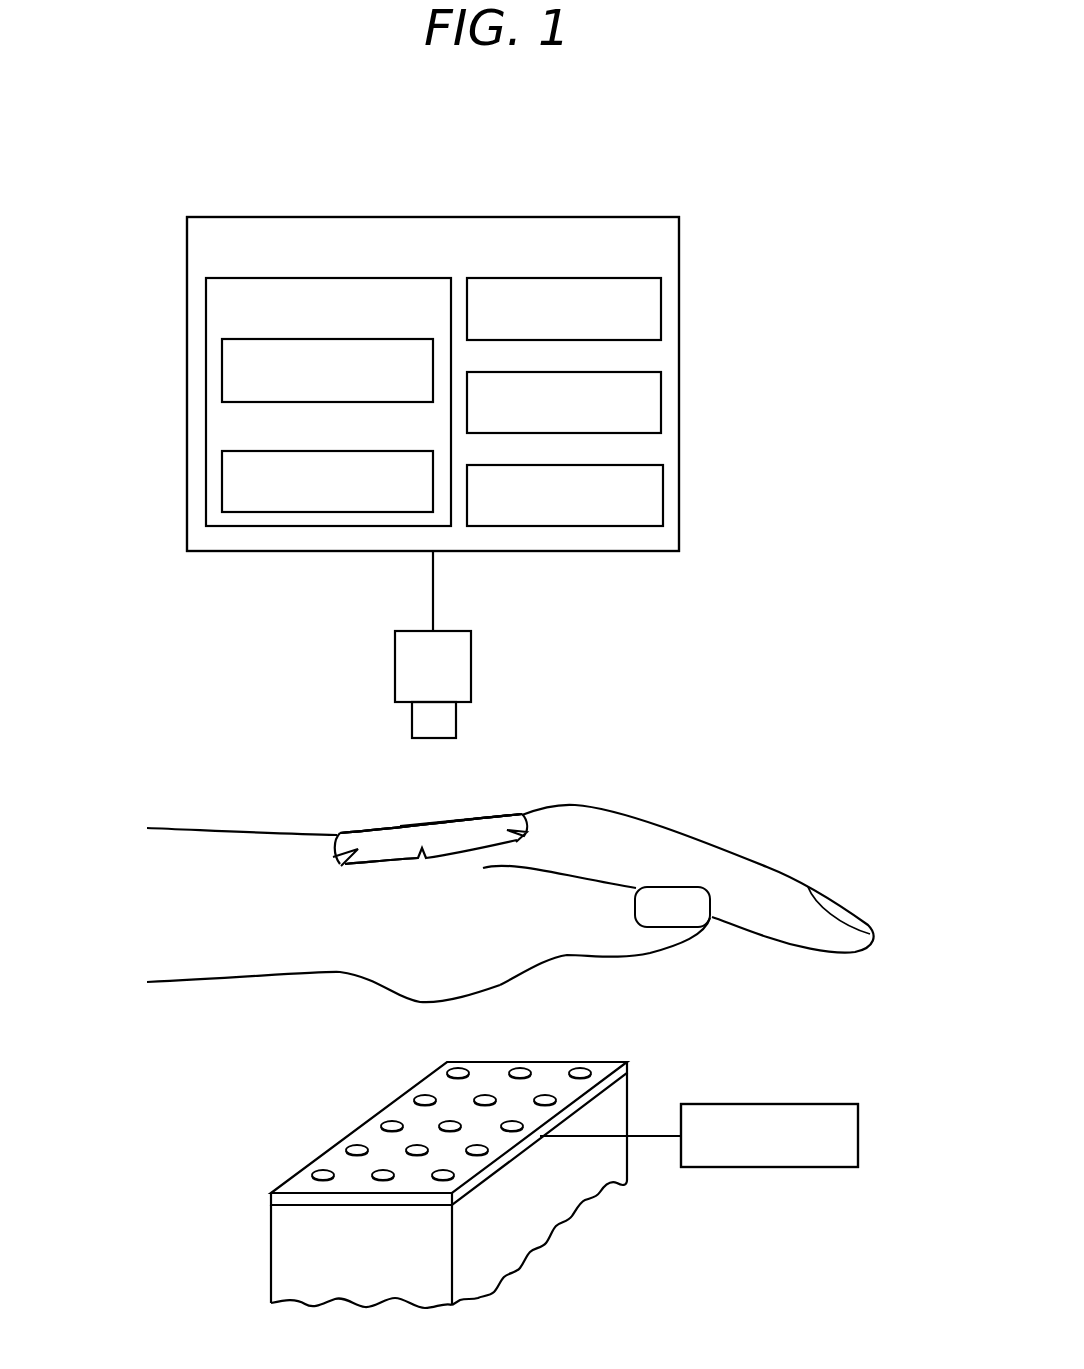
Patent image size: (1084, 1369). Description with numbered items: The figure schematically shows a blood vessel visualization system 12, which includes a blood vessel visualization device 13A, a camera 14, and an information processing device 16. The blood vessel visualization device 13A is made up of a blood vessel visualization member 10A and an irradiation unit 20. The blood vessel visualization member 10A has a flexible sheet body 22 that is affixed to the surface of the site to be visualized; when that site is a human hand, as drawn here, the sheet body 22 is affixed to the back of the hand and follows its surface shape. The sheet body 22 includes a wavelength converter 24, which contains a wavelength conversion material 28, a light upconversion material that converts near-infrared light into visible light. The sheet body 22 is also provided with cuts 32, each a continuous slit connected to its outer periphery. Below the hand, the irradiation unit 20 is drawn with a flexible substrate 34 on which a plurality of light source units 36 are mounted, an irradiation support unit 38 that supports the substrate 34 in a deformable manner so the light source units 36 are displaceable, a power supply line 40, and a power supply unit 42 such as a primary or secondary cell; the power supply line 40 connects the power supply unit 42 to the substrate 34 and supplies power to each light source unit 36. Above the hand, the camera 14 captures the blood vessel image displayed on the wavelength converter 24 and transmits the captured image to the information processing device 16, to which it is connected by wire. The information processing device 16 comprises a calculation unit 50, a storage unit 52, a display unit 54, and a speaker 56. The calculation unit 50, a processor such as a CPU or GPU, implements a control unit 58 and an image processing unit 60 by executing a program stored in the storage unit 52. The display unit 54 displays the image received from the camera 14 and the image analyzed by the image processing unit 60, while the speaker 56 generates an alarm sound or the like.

The blood vessel visualization system 12 is at (124, 180).
The information processing device 16 is at (454, 216).
The calculation unit 50 is at (206, 303).
The control unit 58 is at (222, 360).
The image processing unit 60 is at (222, 471).
The storage unit 52 is at (661, 294).
The display unit 54 is at (661, 387).
The speaker 56 is at (663, 480).
The camera 14 is at (472, 656).
The blood vessel visualization member 10A is at (507, 808).
The blood vessel visualization device 13A is at (347, 798).
The sheet body 22 is at (387, 838).
The wavelength converter 24 is at (430, 823).
The wavelength conversion material 28 is at (430, 823).
The cuts 32 is at (345, 868).
The substrate 34 is at (297, 1175).
The light source units 36 is at (357, 1144).
The irradiation support unit 38 is at (283, 1256).
The power supply line 40 is at (648, 1138).
The power supply unit 42 is at (793, 1167).
The irradiation unit 20 is at (819, 1080).